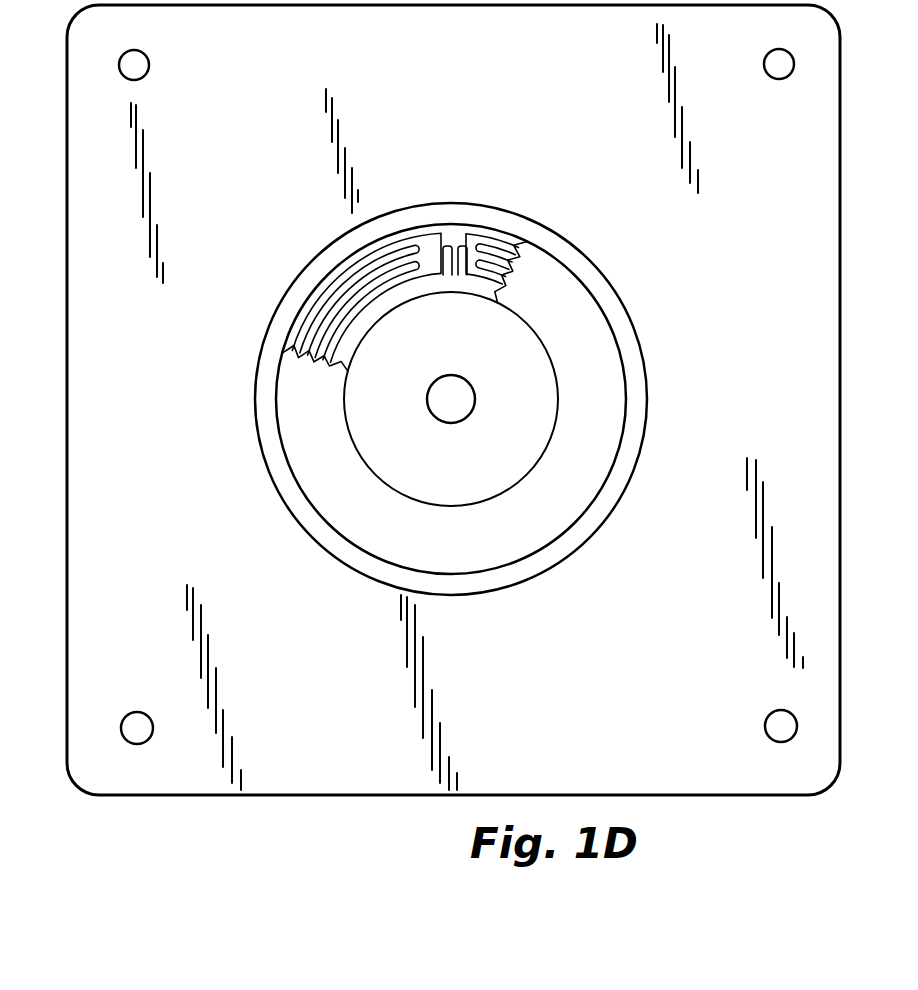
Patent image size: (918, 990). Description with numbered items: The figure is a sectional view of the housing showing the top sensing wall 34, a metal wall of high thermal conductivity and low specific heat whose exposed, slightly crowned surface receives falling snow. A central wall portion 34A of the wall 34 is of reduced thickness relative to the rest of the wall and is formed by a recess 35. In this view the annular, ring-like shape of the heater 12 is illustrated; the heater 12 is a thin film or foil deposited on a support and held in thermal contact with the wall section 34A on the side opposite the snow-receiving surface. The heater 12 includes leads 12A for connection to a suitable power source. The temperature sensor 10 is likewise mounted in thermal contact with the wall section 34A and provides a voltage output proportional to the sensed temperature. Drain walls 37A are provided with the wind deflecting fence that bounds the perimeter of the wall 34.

The temperature sensor 10 is at (446, 385).
The heater 12 is at (368, 300).
The leads 12A is at (463, 246).
The top sensing wall 34 is at (82, 218).
The central wall portion 34A is at (570, 265).
The recess 35 is at (640, 383).
The drain walls 37A is at (777, 735).